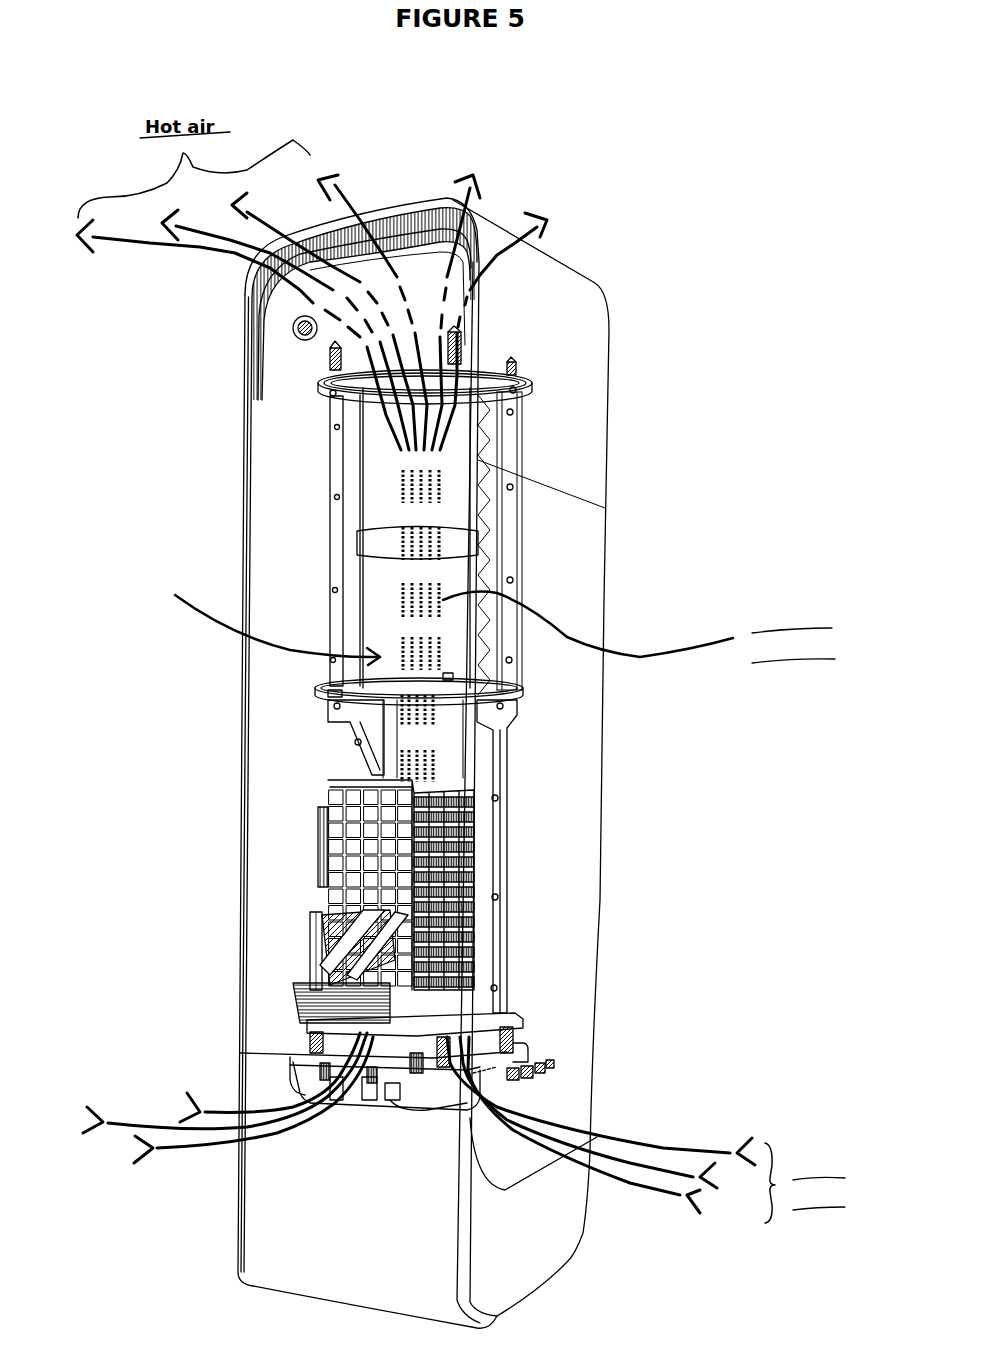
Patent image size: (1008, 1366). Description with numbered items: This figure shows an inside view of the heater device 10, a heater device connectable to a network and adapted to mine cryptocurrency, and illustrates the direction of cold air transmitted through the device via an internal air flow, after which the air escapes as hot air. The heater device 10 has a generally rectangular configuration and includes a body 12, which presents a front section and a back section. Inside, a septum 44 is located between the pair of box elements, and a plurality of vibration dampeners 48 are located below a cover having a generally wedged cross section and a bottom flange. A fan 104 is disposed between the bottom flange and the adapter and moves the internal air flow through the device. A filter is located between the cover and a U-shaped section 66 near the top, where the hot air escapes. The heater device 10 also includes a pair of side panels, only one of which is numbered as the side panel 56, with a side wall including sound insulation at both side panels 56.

The heater device 10 is at (570, 253).
The body 12 is at (240, 790).
The septum 44 is at (428, 936).
The vibration dampeners 48 is at (330, 362).
The side panel 56 is at (553, 897).
The U-shaped section 66 is at (410, 204).
The fan 104 is at (298, 626).